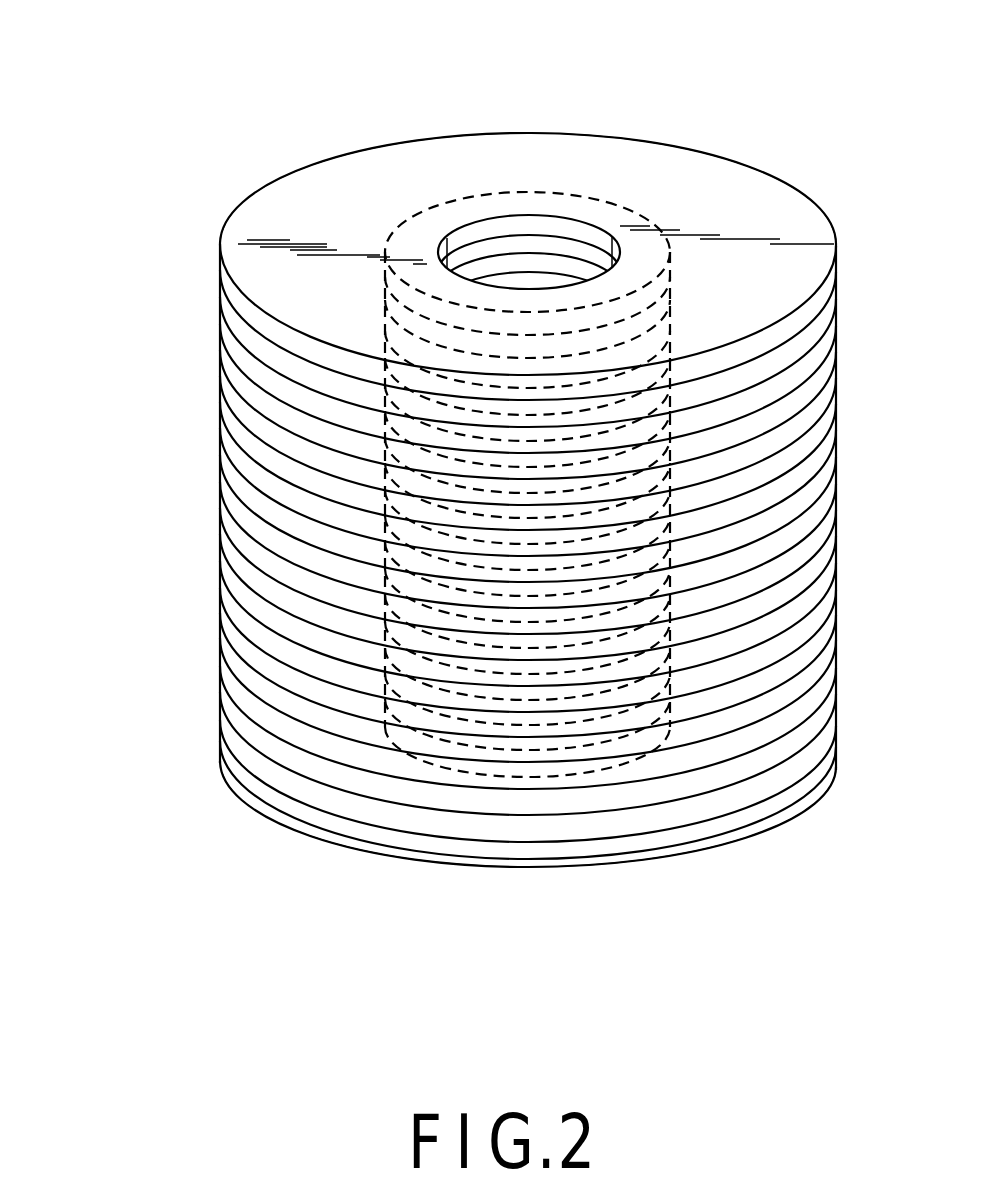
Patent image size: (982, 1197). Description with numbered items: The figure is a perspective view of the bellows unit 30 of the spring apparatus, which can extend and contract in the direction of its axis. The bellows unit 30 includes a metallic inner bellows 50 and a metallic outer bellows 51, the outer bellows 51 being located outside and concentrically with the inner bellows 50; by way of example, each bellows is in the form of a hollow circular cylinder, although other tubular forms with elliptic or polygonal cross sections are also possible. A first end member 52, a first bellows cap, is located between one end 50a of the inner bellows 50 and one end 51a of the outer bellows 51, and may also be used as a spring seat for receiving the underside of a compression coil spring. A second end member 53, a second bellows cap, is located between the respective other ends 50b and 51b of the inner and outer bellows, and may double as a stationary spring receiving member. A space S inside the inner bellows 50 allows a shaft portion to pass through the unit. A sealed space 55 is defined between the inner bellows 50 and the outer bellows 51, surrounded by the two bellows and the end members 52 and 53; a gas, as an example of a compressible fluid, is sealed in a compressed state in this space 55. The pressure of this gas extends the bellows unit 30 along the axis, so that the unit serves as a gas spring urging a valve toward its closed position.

The bellows unit 30 is at (185, 492).
The inner bellows 50 is at (385, 622).
The one end of the inner bellows 50a is at (392, 232).
The other end of the inner bellows 50b is at (385, 722).
The outer bellows 51 is at (220, 556).
The one end of the outer bellows 51a is at (226, 250).
The other end of the outer bellows 51b is at (222, 762).
The first end member 52 is at (483, 157).
The second end member 53 is at (503, 805).
The sealed space 55 is at (330, 688).
The space S is at (537, 275).